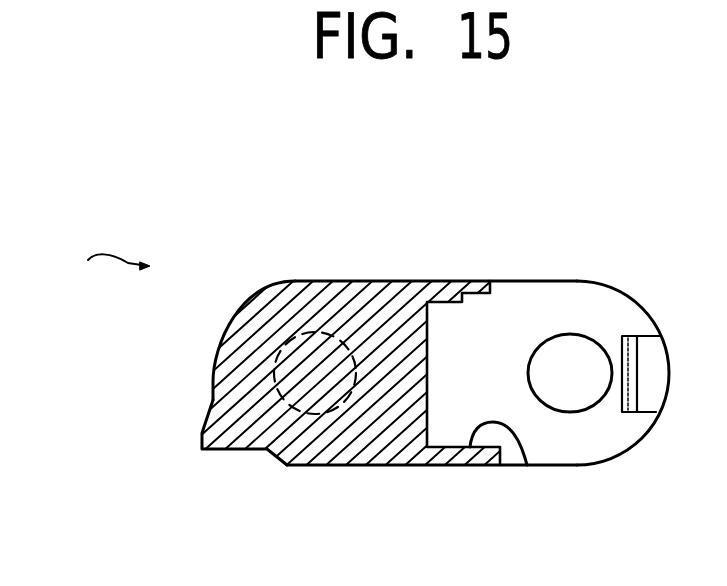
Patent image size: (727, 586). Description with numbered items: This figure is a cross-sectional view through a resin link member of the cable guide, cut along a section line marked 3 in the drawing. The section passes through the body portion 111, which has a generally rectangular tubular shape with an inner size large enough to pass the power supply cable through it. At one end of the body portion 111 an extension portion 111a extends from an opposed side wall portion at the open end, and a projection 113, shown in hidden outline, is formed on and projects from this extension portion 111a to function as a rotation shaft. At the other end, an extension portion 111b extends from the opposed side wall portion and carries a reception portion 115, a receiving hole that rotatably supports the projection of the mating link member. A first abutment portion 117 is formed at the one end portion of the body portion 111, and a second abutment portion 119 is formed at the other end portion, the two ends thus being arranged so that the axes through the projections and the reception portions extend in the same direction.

The viewing direction arrow 3 is at (68, 260).
The body portion 111 is at (375, 282).
The extension portion 111a is at (280, 284).
The extension portion 111b is at (560, 282).
The projection 113 is at (266, 333).
The reception portion 115 is at (579, 412).
The first abutment portion 117 is at (252, 450).
The second abutment portion 119 is at (527, 465).